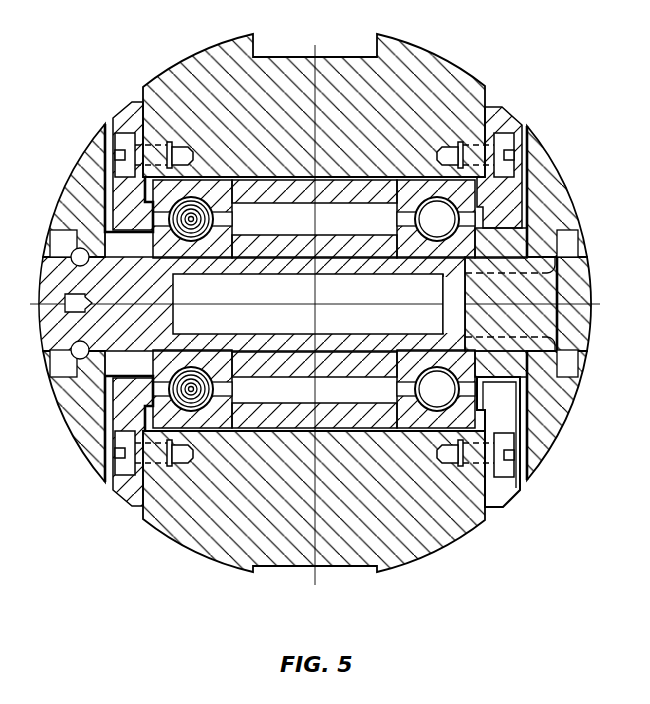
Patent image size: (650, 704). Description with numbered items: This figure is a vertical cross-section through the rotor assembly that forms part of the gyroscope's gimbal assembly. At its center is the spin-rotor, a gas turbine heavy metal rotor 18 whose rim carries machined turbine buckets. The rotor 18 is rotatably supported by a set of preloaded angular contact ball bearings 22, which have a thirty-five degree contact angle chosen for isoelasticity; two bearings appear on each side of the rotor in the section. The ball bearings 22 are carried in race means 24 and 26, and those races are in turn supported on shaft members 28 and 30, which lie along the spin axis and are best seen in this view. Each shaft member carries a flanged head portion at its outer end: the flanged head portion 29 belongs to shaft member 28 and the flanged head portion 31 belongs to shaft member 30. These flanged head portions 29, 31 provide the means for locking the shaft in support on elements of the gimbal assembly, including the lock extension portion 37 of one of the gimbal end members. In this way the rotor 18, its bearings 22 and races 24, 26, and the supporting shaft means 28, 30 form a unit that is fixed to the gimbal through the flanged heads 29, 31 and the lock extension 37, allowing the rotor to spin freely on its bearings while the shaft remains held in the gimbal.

The rotor 18 is at (365, 132).
The angular contact ball bearings 22 is at (447, 228).
The race means 24 is at (314, 304).
The race means 26 is at (314, 306).
The shaft member 28 is at (132, 329).
The flanged head portion 29 is at (56, 243).
The shaft member 30 is at (542, 301).
The flanged head portion 31 is at (580, 245).
The lock extension portion 37 is at (540, 180).